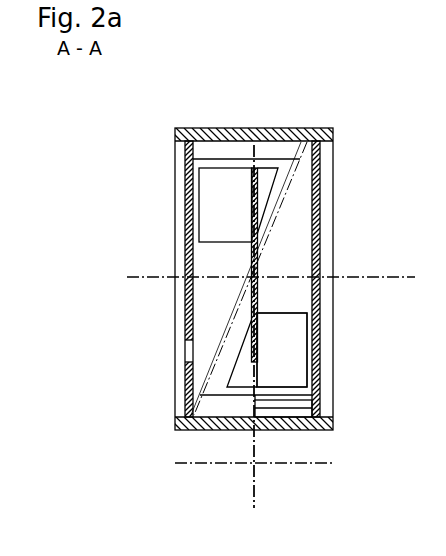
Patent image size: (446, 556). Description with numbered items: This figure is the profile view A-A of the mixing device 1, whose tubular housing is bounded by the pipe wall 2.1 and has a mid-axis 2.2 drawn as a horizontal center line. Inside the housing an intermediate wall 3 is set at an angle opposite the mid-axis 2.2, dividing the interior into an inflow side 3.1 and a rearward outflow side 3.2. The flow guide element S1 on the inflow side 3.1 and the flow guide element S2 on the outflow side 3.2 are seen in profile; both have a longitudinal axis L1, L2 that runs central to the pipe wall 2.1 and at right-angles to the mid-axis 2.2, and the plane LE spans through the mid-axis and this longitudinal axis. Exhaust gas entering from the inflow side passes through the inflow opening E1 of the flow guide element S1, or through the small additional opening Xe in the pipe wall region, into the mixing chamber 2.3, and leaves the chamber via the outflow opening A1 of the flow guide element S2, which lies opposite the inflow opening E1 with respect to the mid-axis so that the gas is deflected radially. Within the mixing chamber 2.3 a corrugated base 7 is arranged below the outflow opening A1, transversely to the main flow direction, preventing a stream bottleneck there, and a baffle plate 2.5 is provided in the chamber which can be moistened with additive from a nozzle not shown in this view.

The mixing device 1 is at (183, 98).
The pipe wall 2.1 is at (235, 137).
The mid-axis 2.2 is at (387, 277).
The mixing chamber 2.3 is at (297, 306).
The baffle plate 2.5 is at (250, 262).
The intermediate wall 3 is at (288, 185).
The inflow side 3.1 is at (218, 323).
The outflow side 3.2 is at (279, 241).
The corrugated base 7 is at (280, 417).
The inflow opening E1 is at (214, 207).
The outflow opening A1 is at (300, 328).
The flow guide element S1 is at (202, 298).
The flow guide element S2 is at (295, 213).
The opening in side wall Xe is at (180, 359).
The plane LE is at (218, 497).
The longitudinal axis L1 is at (257, 477).
The longitudinal axis L2 is at (290, 503).